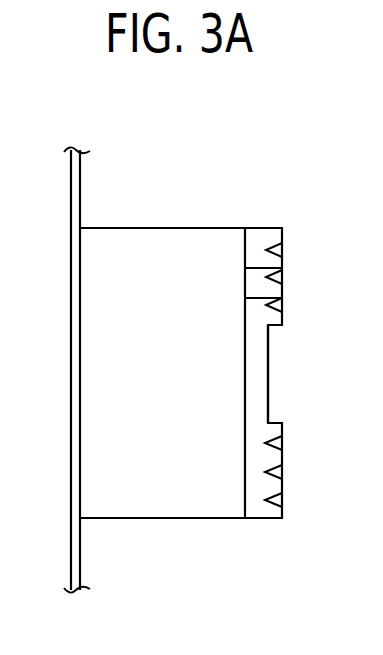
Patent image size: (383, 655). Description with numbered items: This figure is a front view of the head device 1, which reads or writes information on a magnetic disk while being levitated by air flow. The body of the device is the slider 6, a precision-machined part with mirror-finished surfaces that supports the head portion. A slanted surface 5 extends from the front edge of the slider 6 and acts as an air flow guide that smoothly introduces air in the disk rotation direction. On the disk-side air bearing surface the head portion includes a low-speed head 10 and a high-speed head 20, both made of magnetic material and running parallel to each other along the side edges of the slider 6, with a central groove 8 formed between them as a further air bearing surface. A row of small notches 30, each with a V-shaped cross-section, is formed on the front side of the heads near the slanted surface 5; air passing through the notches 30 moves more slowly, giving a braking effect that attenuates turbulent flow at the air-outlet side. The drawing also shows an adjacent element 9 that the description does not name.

The head device 1 is at (178, 224).
The slanted surface 5 is at (258, 509).
The slider 6 is at (157, 505).
The central groove 8 is at (268, 368).
The mounting plate 9 is at (72, 190).
The low-speed head 10 is at (267, 237).
The high-speed head 20 is at (283, 518).
The notches 30 is at (283, 250).